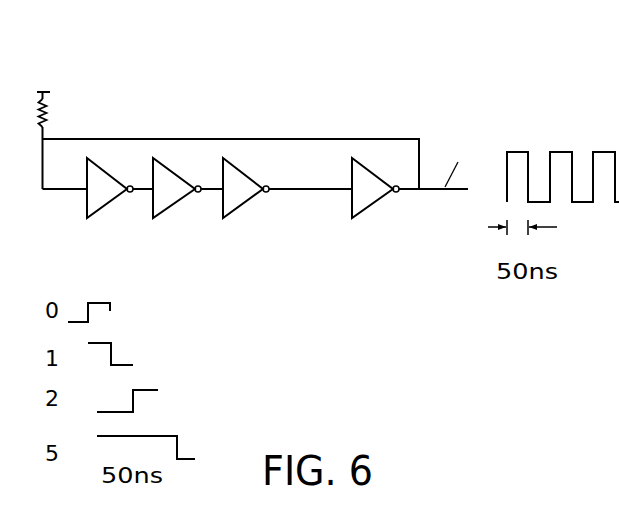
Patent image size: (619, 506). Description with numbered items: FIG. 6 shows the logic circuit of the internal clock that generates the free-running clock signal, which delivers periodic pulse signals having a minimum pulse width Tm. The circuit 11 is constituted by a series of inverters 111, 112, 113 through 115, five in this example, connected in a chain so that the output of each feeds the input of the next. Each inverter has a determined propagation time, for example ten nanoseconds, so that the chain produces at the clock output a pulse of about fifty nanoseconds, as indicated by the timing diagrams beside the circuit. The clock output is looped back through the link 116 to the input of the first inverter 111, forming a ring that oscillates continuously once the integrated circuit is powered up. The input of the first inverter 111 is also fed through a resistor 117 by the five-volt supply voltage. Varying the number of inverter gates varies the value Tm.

The internal clock circuit 11 is at (368, 98).
The first inverter 111 is at (100, 210).
The inverter 112 is at (172, 210).
The inverter 113 is at (237, 210).
The inverter 115 is at (365, 210).
The link 116 is at (128, 139).
The resistor 117 is at (47, 108).